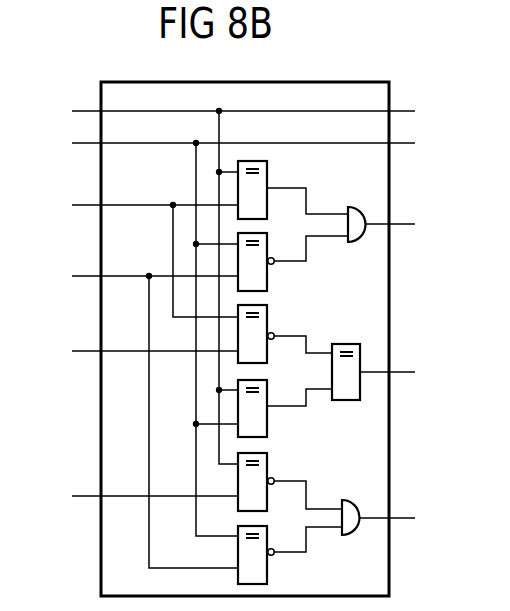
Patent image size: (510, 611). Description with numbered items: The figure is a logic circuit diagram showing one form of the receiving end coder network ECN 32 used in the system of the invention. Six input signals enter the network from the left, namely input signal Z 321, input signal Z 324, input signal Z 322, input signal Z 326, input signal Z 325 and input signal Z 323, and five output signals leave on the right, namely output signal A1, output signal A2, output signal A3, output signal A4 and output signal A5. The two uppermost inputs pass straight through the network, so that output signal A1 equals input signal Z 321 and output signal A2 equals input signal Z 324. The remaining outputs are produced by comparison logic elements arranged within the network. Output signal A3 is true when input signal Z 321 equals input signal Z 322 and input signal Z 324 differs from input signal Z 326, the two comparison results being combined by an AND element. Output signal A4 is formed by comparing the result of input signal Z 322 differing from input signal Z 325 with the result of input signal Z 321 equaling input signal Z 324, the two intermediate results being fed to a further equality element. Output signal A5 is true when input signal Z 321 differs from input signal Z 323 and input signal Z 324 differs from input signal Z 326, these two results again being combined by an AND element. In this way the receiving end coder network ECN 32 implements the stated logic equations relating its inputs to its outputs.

The receiving end coder network 32 is at (389, 82).
The input signal Z321 321 is at (203, 278).
The input signal Z322 322 is at (128, 252).
The input signal Z323 323 is at (128, 495).
The input signal Z324 324 is at (203, 331).
The input signal Z325 325 is at (128, 350).
The input signal Z326 326 is at (128, 413).
The output signal A1 is at (422, 111).
The output signal A2 is at (422, 143).
The output signal A3 is at (411, 224).
The output signal A4 is at (410, 372).
The output signal A5 is at (407, 518).